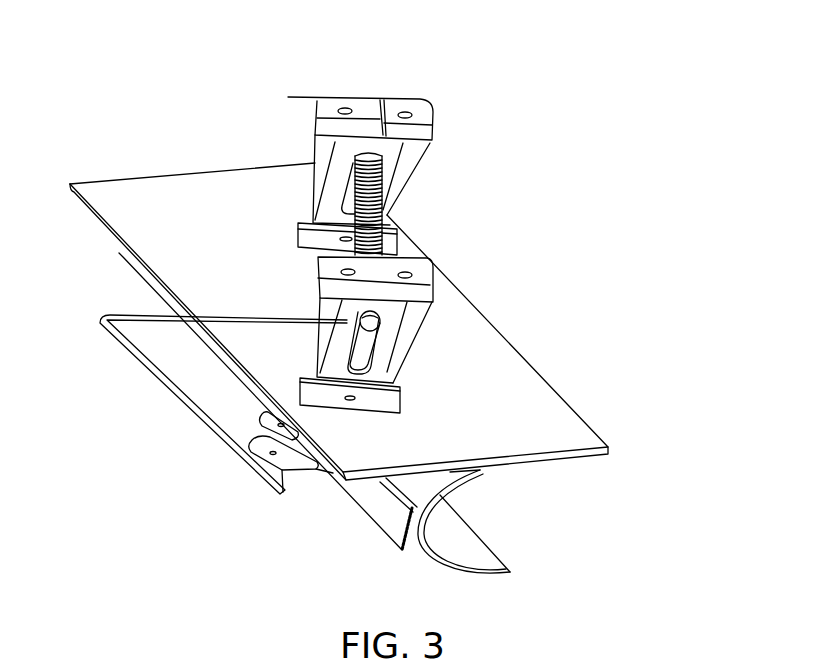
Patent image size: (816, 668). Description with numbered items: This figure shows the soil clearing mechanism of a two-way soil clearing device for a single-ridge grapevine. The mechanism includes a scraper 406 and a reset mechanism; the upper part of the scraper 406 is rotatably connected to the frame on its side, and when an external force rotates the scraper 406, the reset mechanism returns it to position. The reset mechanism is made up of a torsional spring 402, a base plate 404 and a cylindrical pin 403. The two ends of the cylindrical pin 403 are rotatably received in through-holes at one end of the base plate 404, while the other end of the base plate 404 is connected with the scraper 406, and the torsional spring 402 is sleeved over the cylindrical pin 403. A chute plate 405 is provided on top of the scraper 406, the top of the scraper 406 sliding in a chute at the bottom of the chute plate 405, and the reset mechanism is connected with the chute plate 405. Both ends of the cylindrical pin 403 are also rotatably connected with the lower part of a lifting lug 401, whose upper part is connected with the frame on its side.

The lifting lug 401 is at (414, 130).
The torsional spring 402 is at (368, 202).
The cylindrical pin 403 is at (372, 325).
The base plate 404 is at (375, 400).
The chute plate 405 is at (445, 432).
The scraper 406 is at (470, 550).